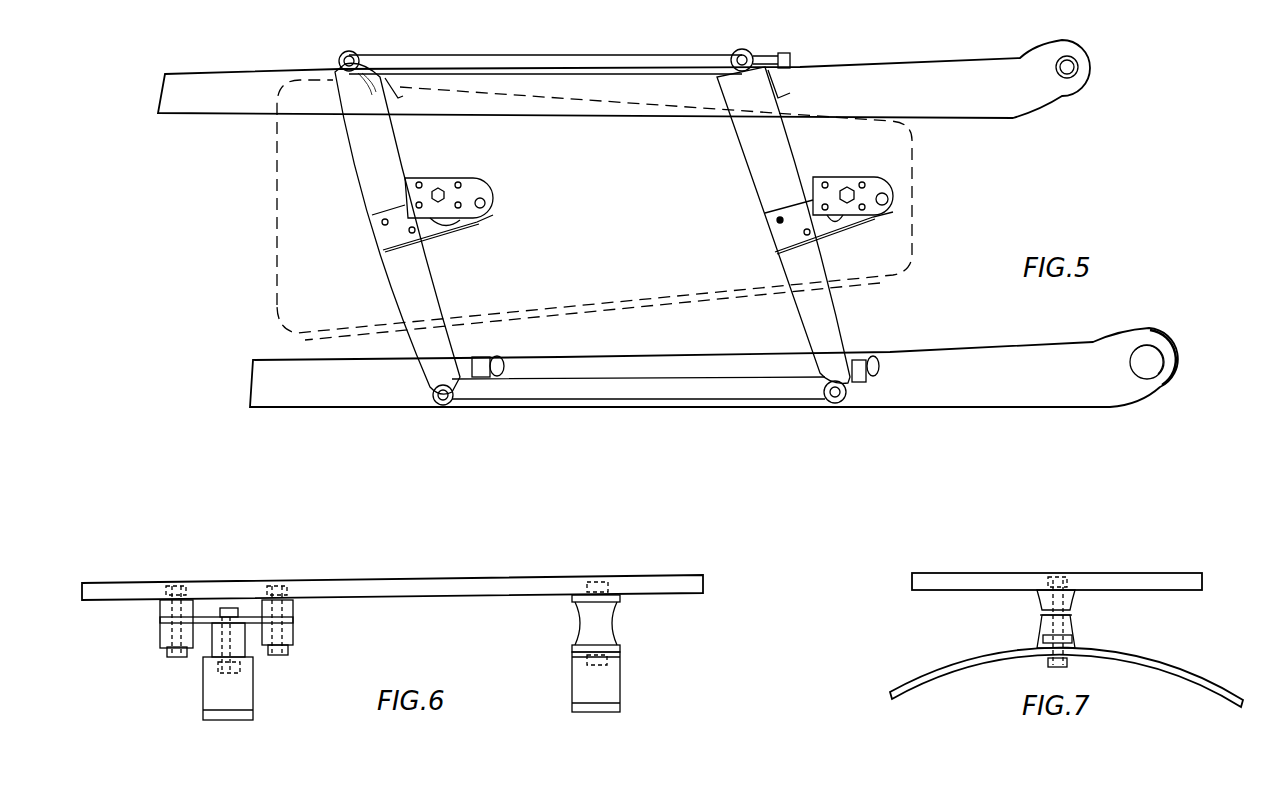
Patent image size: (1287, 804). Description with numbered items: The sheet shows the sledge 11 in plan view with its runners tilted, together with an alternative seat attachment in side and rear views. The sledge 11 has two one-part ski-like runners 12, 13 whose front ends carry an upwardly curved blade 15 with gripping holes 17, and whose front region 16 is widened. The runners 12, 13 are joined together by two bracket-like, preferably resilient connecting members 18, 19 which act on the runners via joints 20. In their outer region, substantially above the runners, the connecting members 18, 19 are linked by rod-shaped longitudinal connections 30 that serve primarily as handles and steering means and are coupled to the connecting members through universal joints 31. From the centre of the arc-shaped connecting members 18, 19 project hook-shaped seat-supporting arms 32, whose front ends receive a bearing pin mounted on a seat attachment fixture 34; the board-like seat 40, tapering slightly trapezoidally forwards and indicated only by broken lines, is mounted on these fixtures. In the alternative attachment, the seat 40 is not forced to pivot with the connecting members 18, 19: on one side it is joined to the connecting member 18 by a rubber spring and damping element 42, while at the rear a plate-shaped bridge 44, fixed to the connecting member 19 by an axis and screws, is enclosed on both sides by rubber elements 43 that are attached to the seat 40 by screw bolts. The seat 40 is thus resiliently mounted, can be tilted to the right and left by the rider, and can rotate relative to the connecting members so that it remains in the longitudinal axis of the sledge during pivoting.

In FIG. 5, the sledge 11 is at (1133, 107).
In FIG. 5, the runner 12 is at (913, 68).
In FIG. 5, the runner 13 is at (677, 360).
In FIG. 5, the upwardly curved blade 15 is at (1180, 368).
In FIG. 5, the front region of the runners 16 is at (1085, 395).
In FIG. 5, the gripping holes 17 is at (1070, 68).
In FIG. 5, the connecting member 18 is at (752, 153).
In FIG. 6, the connecting member 18 is at (612, 678).
In FIG. 5, the connecting member 19 is at (395, 275).
In FIG. 6, the connecting member 19 is at (247, 693).
In FIG. 7, the connecting member 19 is at (1155, 662).
In FIG. 5, the joint 20 is at (860, 347).
In FIG. 5, the longitudinal connection 30 is at (560, 60).
In FIG. 5, the universal joint 31 is at (753, 56).
In FIG. 5, the seat-supporting arm 32 is at (783, 233).
In FIG. 5, the seat attachment fixture 34 is at (837, 180).
In FIG. 5, the seat 40 is at (290, 212).
In FIG. 6, the seat 40 is at (462, 583).
In FIG. 7, the seat 40 is at (990, 577).
In FIG. 6, the rubber element 42 is at (608, 628).
In FIG. 6, the rubber elements 43 is at (160, 630).
In FIG. 7, the rubber elements 43 is at (1065, 627).
In FIG. 6, the bridge 44 is at (205, 623).